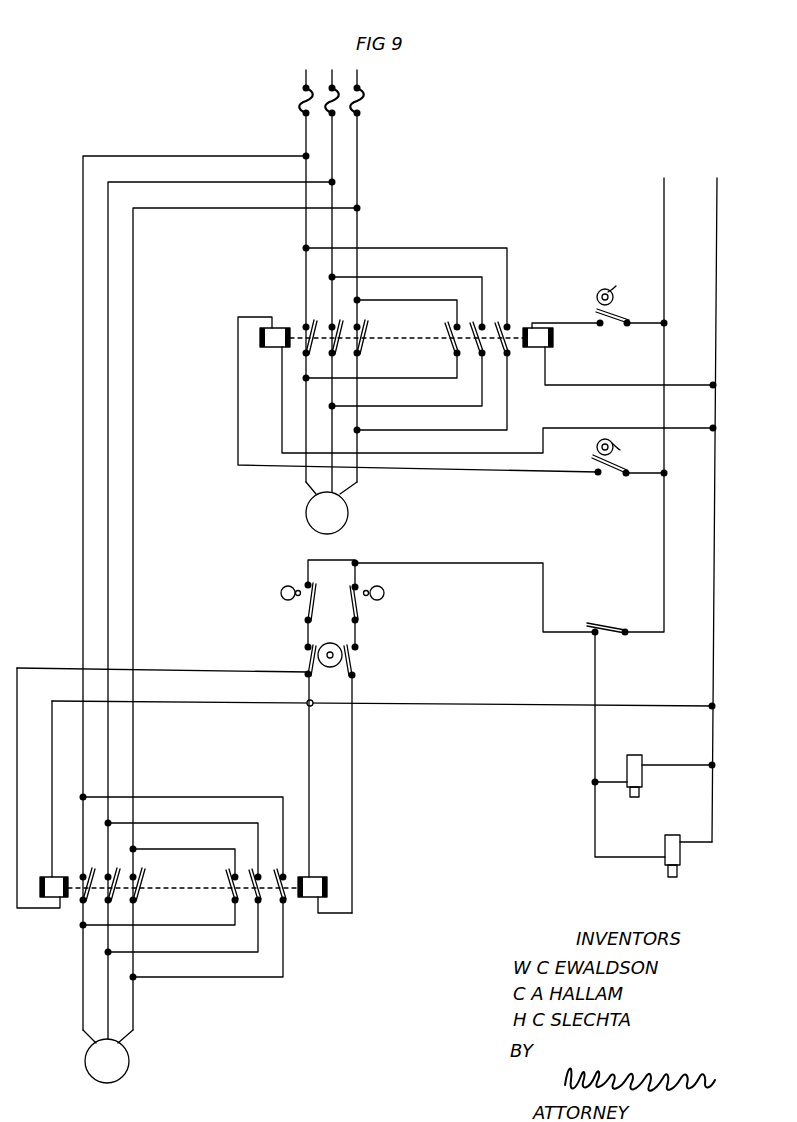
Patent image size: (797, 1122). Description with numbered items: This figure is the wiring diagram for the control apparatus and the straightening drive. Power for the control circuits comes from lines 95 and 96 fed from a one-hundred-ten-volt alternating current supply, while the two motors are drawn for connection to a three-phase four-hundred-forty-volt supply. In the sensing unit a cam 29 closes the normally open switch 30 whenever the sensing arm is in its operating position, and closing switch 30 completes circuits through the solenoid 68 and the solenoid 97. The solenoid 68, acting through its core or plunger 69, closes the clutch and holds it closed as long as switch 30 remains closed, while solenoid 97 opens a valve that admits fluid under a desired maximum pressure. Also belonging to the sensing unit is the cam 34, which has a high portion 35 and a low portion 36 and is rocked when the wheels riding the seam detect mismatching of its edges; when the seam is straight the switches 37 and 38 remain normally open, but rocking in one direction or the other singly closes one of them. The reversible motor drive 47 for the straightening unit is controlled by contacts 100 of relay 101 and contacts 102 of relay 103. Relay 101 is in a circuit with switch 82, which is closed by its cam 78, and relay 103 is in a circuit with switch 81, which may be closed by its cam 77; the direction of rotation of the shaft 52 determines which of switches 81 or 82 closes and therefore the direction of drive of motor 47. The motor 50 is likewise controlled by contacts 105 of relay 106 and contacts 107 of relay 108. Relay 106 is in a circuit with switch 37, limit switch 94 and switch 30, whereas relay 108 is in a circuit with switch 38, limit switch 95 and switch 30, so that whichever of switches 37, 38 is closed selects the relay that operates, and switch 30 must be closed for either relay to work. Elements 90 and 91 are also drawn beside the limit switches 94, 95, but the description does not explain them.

The cam 29 is at (605, 622).
The normally open switch 30 is at (604, 636).
The cam 34 is at (305, 677).
The high portion 35 is at (340, 677).
The low portion 36 is at (340, 640).
The switch 37 is at (310, 660).
The switch 38 is at (352, 660).
The reversible motor drive 47 is at (342, 512).
The motor 50 is at (112, 1054).
The shaft 52 is at (598, 297).
The solenoid 68 is at (640, 782).
The core or plunger 69 is at (630, 795).
The cam 77 is at (624, 284).
The cam 78 is at (614, 449).
The switch 81 is at (608, 326).
The switch 82 is at (607, 477).
The cam 90 is at (283, 578).
The cam 91 is at (385, 575).
The limit switch 94 is at (322, 603).
The line 95 is at (664, 198).
The line 96 is at (716, 198).
The solenoid 97 is at (664, 844).
The contacts 100 is at (378, 333).
The relay 101 is at (272, 341).
The contacts 102 is at (446, 340).
The relay 103 is at (540, 343).
The contacts 105 is at (138, 888).
The relay 106 is at (50, 890).
The contacts 107 is at (228, 875).
The relay 108 is at (312, 890).